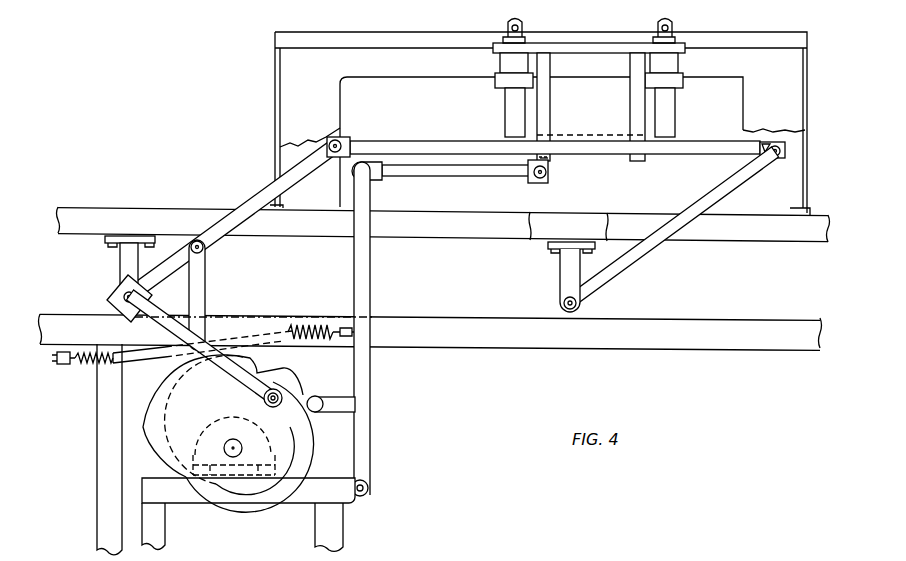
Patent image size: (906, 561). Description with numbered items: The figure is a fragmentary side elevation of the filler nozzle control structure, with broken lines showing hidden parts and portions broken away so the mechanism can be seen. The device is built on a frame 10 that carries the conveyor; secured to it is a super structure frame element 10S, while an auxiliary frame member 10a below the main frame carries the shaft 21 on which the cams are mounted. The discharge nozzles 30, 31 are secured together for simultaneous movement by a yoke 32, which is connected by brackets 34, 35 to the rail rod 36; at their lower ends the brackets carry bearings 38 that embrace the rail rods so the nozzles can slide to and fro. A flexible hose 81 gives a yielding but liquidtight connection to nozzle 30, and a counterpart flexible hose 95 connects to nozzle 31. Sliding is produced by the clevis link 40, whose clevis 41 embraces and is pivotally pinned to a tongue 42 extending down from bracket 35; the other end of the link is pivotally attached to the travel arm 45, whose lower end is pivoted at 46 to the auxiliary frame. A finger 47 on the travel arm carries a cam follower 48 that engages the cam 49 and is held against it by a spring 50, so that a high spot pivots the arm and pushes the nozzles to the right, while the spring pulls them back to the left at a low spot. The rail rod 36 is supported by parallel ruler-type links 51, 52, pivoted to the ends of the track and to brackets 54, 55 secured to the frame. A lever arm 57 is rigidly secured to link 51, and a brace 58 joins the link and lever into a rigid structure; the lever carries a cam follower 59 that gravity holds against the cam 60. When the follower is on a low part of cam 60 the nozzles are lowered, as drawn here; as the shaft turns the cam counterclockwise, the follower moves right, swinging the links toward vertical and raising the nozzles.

The frame 10 is at (748, 236).
The super structure frame element 10S is at (290, 32).
The auxiliary frame member 10a is at (318, 532).
The shaft 21 is at (236, 446).
The discharge nozzle 30 is at (668, 103).
The discharge nozzle 31 is at (506, 102).
The yoke 32 is at (597, 47).
The bracket 34 is at (637, 104).
The bracket 35 is at (547, 104).
The rail rod 36 is at (428, 146).
The bearing 38 is at (550, 147).
The clevis link 40 is at (444, 170).
The clevis 41 is at (528, 178).
The tongue 42 is at (547, 164).
The travel arm 45 is at (372, 270).
The pivot 46 is at (368, 493).
The finger 47 is at (343, 398).
The cam follower 48 is at (320, 397).
The cam 49 is at (306, 446).
The spring 50 is at (318, 324).
The link 51 is at (262, 197).
The link 52 is at (651, 253).
The bracket 54 is at (566, 268).
The bracket 55 is at (125, 258).
The lever arm 57 is at (206, 276).
The brace 58 is at (238, 334).
The cam follower 59 is at (282, 391).
The cam 60 is at (162, 396).
The flexible hose 81 is at (672, 24).
The flexible hose 95 is at (520, 24).